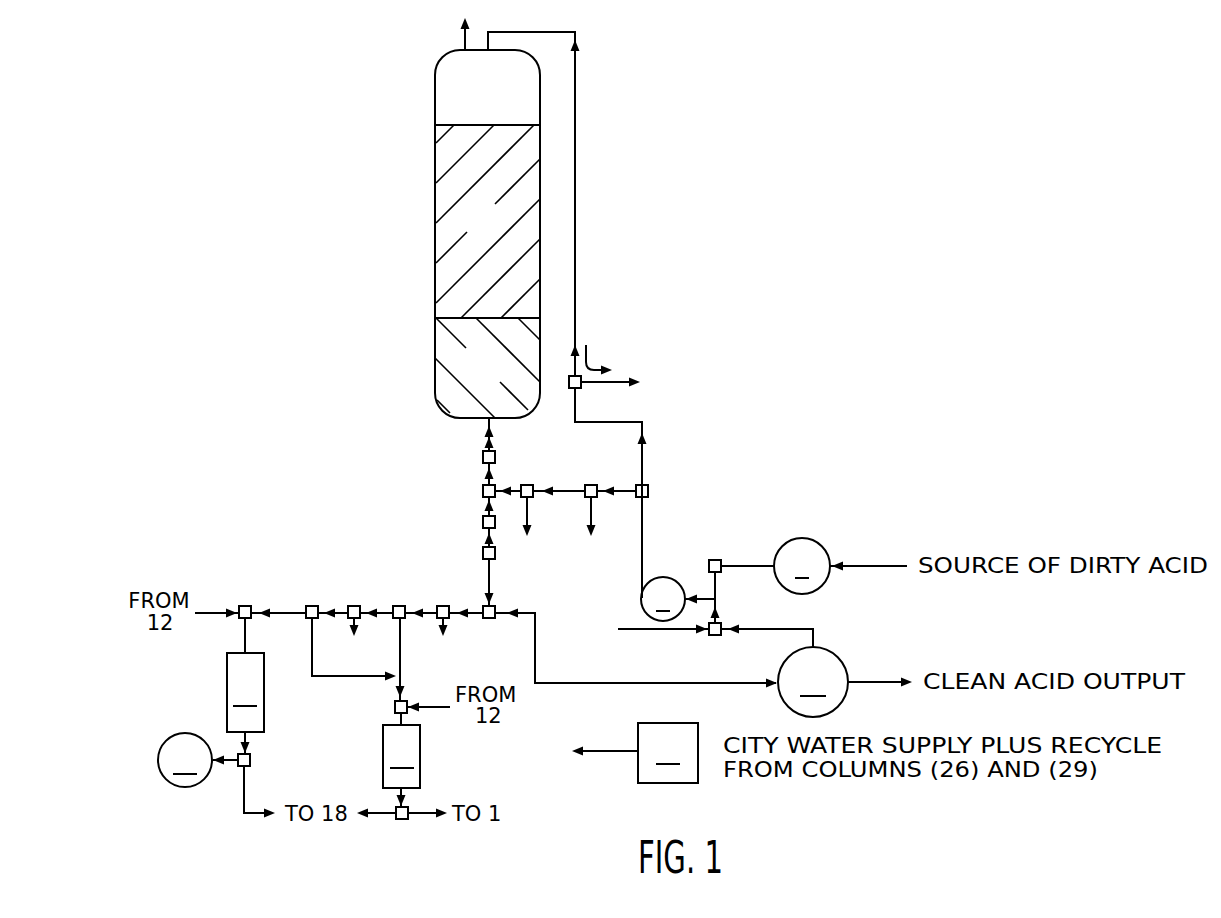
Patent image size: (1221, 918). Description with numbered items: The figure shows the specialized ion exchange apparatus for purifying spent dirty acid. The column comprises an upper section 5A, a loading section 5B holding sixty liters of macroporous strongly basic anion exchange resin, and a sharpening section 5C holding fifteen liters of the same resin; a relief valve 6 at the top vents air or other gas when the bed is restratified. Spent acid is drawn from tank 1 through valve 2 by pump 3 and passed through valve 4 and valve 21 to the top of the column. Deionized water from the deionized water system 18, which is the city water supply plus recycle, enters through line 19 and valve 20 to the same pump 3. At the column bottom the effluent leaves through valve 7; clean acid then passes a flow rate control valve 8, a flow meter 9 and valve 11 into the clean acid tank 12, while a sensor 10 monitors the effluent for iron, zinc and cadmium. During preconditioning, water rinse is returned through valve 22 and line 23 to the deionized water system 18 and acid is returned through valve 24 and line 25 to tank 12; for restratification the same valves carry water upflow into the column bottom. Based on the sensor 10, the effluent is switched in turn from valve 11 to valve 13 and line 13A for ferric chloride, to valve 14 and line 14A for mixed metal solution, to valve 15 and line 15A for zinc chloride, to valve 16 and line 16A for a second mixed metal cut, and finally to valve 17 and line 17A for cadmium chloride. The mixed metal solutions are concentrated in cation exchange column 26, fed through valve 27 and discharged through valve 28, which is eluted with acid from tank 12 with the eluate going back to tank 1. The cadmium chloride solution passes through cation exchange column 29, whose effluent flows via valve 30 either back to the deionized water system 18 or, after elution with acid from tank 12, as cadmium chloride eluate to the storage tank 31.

The tank 1 is at (840, 566).
The valve 2 is at (729, 588).
The pump 3 is at (663, 599).
The valve 4 is at (633, 541).
The column top section 5A is at (487, 87).
The loading section 5B is at (487, 221).
The sharpening section 5C is at (487, 368).
The relief valve 6 is at (454, 34).
The valve 7 is at (489, 497).
The flow rate control valve 8 is at (476, 528).
The flow meter 9 is at (476, 573).
The sensor 10 is at (471, 465).
The valve 11 is at (613, 647).
The clean acid tank 12 is at (845, 682).
The valve 13 is at (429, 597).
The line 13A is at (447, 641).
The valve 14 is at (386, 597).
The line 14A is at (421, 660).
The valve 15 is at (343, 597).
The line 15A is at (360, 641).
The valve 16 is at (289, 597).
The line 16A is at (348, 663).
The valve 17 is at (227, 597).
The line 17A is at (266, 636).
The deionized water system 18 is at (635, 753).
The line 19 is at (648, 628).
The valve 20 is at (757, 643).
The valve 21 is at (596, 421).
The valve 22 is at (610, 475).
The line 23 is at (598, 531).
The valve 24 is at (551, 475).
The line 25 is at (531, 531).
The cation exchange column 26 is at (401, 766).
The valve 27 is at (406, 710).
The valve 28 is at (402, 828).
The cation exchange column 29 is at (245, 703).
The valve 30 is at (247, 783).
The storage tank 31 is at (185, 760).